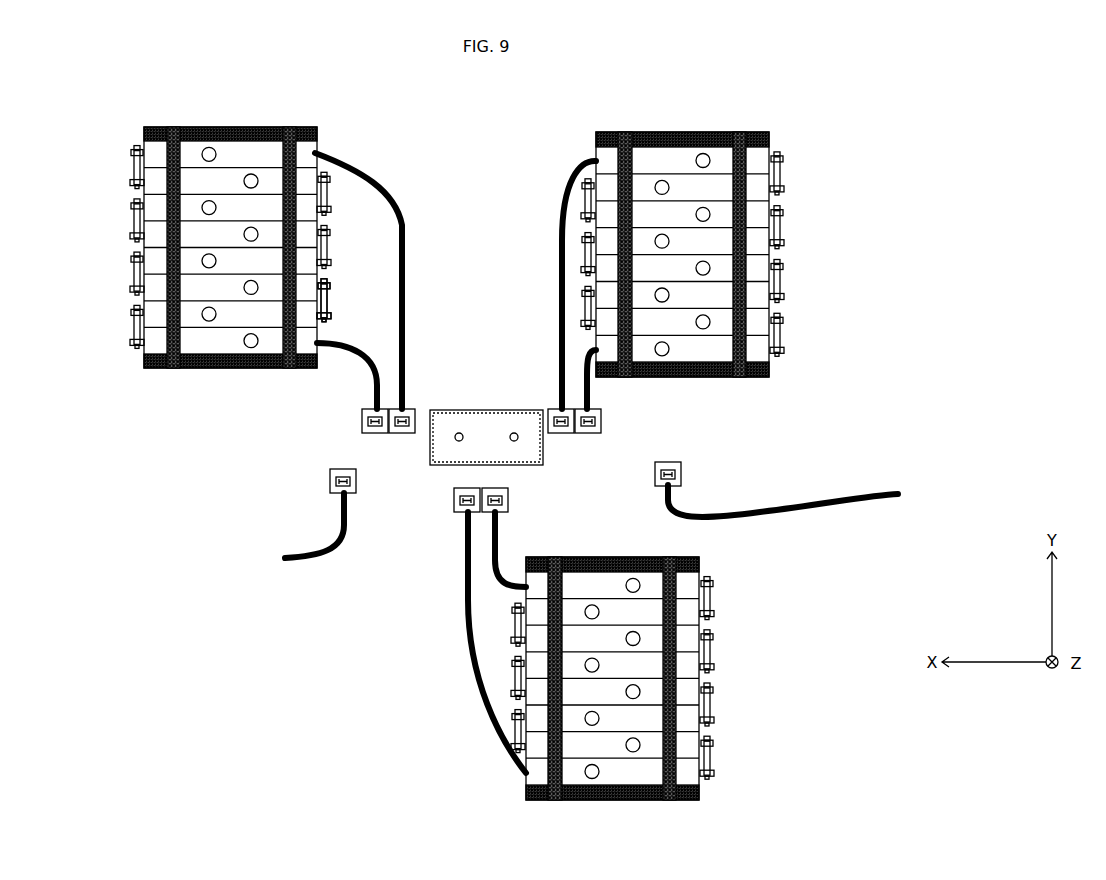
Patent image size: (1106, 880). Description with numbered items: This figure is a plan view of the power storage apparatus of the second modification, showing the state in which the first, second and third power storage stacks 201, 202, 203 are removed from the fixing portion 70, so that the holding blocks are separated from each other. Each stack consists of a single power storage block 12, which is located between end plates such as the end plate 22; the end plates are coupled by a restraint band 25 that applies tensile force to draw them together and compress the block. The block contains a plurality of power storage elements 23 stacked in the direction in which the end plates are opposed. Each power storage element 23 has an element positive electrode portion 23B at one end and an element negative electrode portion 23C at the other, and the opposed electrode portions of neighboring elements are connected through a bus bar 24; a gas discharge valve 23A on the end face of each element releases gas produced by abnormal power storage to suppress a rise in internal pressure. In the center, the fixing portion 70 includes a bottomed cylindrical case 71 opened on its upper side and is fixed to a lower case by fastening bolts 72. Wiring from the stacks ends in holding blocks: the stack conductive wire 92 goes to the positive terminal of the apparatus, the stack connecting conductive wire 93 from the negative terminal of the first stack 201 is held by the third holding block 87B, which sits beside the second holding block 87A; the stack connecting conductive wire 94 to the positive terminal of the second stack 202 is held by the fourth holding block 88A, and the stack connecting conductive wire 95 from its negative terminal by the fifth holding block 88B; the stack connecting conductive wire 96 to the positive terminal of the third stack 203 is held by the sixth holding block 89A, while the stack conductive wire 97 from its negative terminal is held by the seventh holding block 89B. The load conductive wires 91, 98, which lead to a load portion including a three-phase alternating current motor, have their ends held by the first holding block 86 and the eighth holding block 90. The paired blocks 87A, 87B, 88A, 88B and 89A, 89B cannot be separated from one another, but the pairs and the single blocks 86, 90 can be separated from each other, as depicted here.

The second power storage block 12 is at (323, 298).
The end plate 22 is at (233, 362).
The power storage element 23 is at (209, 347).
The gas discharge valve 23A is at (250, 343).
The element positive electrode portion 23B is at (136, 316).
The element negative electrode portion 23C is at (133, 350).
The bus bar 24 is at (136, 333).
The restraint band 25 is at (167, 157).
The fixing portion 70 is at (537, 471).
The case 71 is at (440, 465).
The fastening bolt 72 is at (460, 432).
The first holding block 86 is at (333, 480).
The second holding block 87A is at (365, 425).
The third holding block 87B is at (410, 409).
The fourth holding block 88A is at (456, 497).
The fifth holding block 88B is at (507, 505).
The sixth holding block 89A is at (563, 437).
The seventh holding block 89B is at (592, 435).
The eighth holding block 90 is at (683, 473).
The load conductive wire 91 is at (340, 513).
The stack conductive wire 92 is at (347, 363).
The stack connecting conductive wire 93 is at (372, 185).
The stack connecting conductive wire 94 is at (466, 600).
The stack connecting conductive wire 95 is at (497, 575).
The stack connecting conductive wire 96 is at (558, 232).
The stack conductive wire 97 is at (593, 432).
The load conductive wire 98 is at (843, 502).
The first power storage stack 201 is at (124, 233).
The second power storage stack 202 is at (736, 662).
The third power storage stack 203 is at (800, 233).